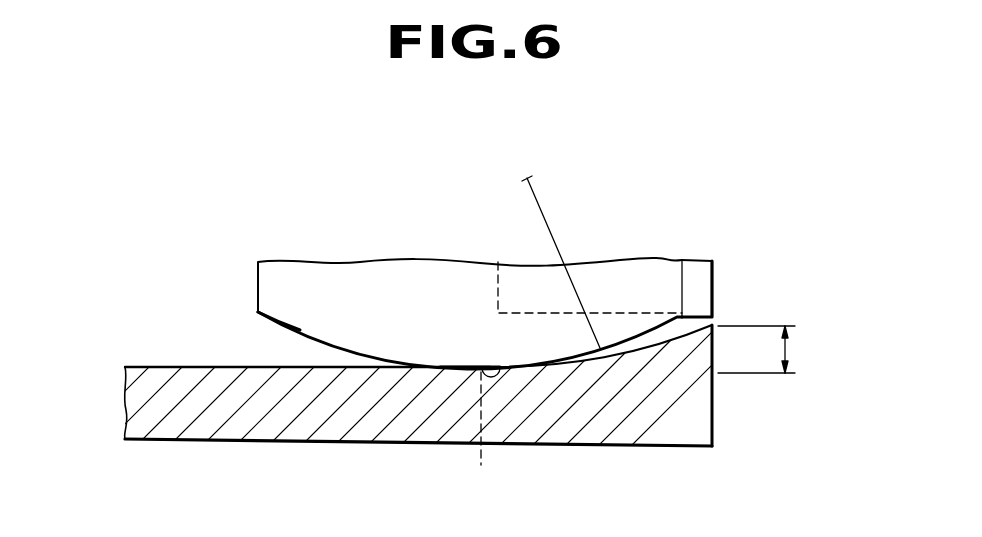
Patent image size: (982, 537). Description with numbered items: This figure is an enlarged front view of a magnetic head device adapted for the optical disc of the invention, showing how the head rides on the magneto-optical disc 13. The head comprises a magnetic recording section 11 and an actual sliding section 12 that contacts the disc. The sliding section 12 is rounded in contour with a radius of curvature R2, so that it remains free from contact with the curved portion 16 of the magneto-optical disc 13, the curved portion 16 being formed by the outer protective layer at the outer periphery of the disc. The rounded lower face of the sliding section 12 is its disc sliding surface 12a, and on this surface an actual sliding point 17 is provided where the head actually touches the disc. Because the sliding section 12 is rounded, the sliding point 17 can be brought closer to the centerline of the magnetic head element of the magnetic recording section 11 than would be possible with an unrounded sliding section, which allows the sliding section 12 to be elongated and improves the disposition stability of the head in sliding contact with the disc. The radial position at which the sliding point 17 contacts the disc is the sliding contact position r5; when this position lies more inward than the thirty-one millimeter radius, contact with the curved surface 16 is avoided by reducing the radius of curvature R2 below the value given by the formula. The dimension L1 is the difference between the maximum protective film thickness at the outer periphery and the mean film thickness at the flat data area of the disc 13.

The magnetic recording section 11 is at (705, 285).
The actual sliding section 12 is at (337, 290).
The disc sliding surface 12a is at (282, 322).
The magneto-optical disc 13 is at (142, 400).
The curved portion 16 is at (651, 350).
The actual sliding point 17 is at (500, 368).
The radius of curvature R2 is at (561, 262).
The sliding contact position r5 is at (486, 434).
The difference between maximum film thickness and mean film thickness L1 is at (770, 349).